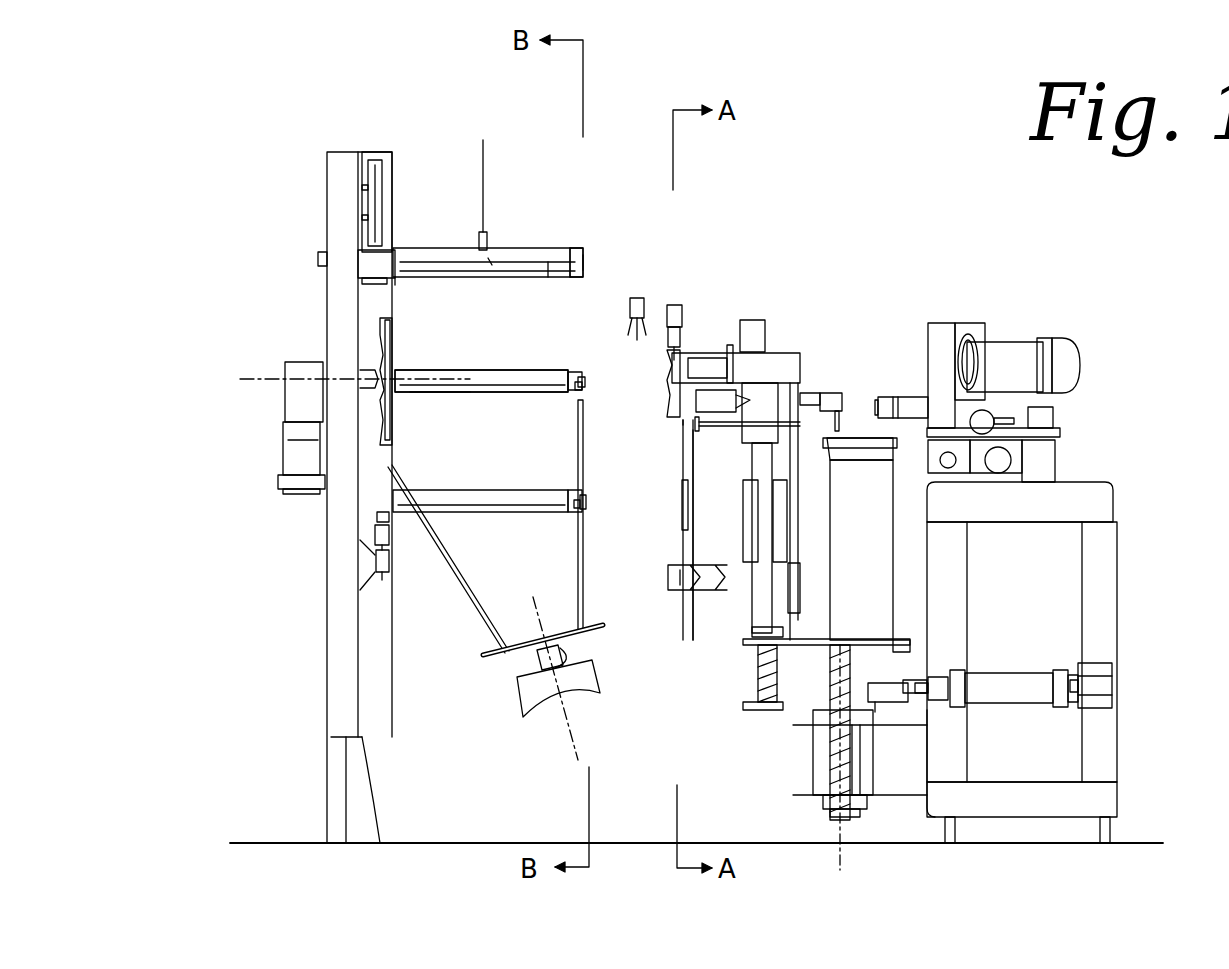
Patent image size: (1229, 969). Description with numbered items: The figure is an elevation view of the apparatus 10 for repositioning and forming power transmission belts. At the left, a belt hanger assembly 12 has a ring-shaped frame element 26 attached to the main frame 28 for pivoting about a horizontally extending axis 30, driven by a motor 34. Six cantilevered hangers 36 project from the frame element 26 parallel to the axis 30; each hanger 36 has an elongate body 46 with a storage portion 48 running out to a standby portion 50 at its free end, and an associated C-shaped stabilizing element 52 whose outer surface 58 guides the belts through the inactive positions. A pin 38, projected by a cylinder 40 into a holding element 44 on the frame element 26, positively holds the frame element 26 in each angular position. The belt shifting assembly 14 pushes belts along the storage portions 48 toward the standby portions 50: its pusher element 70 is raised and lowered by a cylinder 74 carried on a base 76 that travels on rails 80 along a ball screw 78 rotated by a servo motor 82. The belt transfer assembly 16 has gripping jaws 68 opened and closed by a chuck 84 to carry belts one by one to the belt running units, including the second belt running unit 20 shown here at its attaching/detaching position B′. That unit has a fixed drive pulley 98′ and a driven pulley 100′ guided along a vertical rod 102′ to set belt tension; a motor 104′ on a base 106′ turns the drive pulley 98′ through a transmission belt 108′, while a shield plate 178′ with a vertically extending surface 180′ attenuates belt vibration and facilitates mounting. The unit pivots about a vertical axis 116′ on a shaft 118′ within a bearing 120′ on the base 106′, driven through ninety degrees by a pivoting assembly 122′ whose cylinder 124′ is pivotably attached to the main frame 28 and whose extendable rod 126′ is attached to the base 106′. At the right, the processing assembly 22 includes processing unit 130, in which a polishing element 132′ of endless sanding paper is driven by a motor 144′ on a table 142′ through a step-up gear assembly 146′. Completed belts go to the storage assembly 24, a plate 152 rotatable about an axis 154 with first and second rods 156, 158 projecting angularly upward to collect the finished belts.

The apparatus for repositioning and forming a power transmission belt 10 is at (1019, 204).
The belt hanger assembly 12 is at (570, 308).
The belt shifting assembly 14 is at (401, 166).
The belt transfer assembly 16 is at (757, 436).
The second belt running unit 20 is at (793, 557).
The processing assembly 22 is at (993, 337).
The storage assembly 24 is at (599, 515).
The ring-shaped frame element 26 is at (421, 381).
The main frame 28 is at (345, 145).
The horizontally extending axis 30 is at (285, 375).
The motor 34 is at (275, 428).
The cantilevered hanger 36 is at (620, 327).
The pin 38 is at (320, 529).
The cylinder 40 is at (403, 570).
The holding element 44 is at (375, 416).
The elongate body 46 is at (525, 248).
The storage portion 48 is at (475, 245).
The standby portion 50 is at (621, 356).
The stabilizing element 52 is at (472, 409).
The outer surface 58 is at (490, 421).
The gripping jaws 68 is at (679, 328).
The pusher element 70 is at (490, 179).
The cylinder 74 is at (412, 203).
The base 76 is at (408, 255).
The ball screw 78 is at (490, 250).
The rails 80 is at (550, 248).
The servo motor 82 is at (266, 233).
The chuck 84 is at (659, 285).
The drive pulley 98′ is at (655, 392).
The driven pulley 100′ is at (677, 540).
The vertical rod 102′ is at (740, 654).
The motor 104′ is at (842, 573).
The base 106′ is at (826, 615).
The transmission belt 108′ is at (858, 539).
The vertical axis 116′ is at (805, 779).
The shaft 118′ is at (792, 732).
The bearing 120′ is at (909, 813).
The pivoting assembly 122′ is at (1126, 650).
The cylinder 124′ is at (1014, 656).
The extendable rod 126′ is at (966, 635).
The processing unit 130 is at (1080, 369).
The polishing element 132′ is at (904, 367).
The table 142′ is at (1041, 442).
The motor 144′ is at (1025, 332).
The step-up gear assembly 146′ is at (967, 341).
The plate 152 is at (584, 681).
The axis 154 is at (541, 696).
The first rod 156 is at (539, 611).
The second rod 158 is at (448, 570).
The shield plate 178′ is at (721, 535).
The vertically extending surface 180′ is at (660, 518).
The attaching/detaching position B′ is at (790, 311).